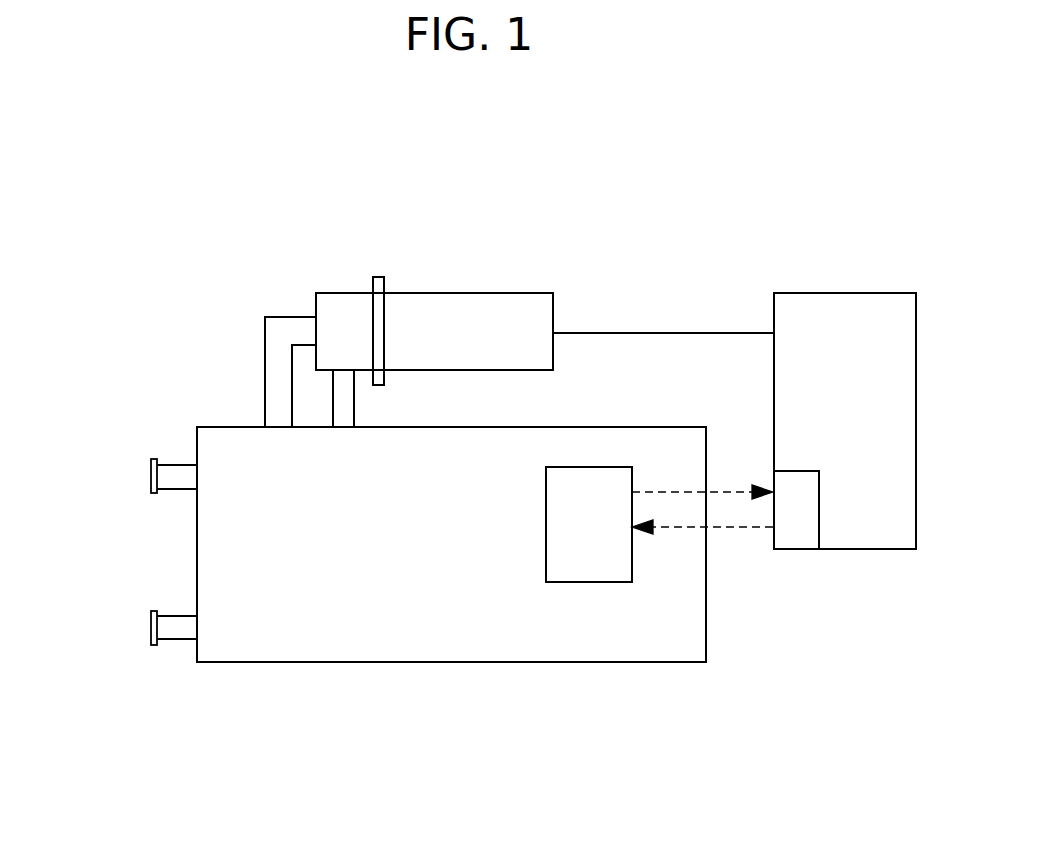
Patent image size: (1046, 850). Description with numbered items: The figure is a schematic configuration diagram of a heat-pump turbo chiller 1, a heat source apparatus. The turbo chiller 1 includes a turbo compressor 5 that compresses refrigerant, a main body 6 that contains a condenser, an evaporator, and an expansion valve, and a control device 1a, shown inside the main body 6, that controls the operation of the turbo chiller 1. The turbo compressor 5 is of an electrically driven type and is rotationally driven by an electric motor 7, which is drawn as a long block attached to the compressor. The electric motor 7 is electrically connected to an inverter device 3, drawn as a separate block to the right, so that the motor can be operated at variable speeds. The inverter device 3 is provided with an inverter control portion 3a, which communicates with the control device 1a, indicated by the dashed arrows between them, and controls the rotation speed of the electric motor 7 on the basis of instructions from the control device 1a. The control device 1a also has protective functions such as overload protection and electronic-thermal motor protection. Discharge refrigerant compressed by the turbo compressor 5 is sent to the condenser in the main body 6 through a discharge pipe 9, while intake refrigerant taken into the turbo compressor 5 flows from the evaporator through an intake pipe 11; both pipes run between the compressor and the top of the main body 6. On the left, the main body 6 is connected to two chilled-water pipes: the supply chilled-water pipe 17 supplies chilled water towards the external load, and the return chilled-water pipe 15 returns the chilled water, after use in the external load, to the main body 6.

The turbo chiller 1 is at (532, 241).
The control device 1a is at (546, 519).
The inverter device 3 is at (847, 292).
The inverter control portion 3a is at (800, 537).
The turbo compressor 5 is at (342, 292).
The main body 6 is at (430, 663).
The electric motor 7 is at (460, 292).
The discharge pipe 9 is at (265, 374).
The intake pipe 11 is at (354, 403).
The return chilled-water pipe 15 is at (151, 471).
The supply chilled-water pipe 17 is at (151, 629).